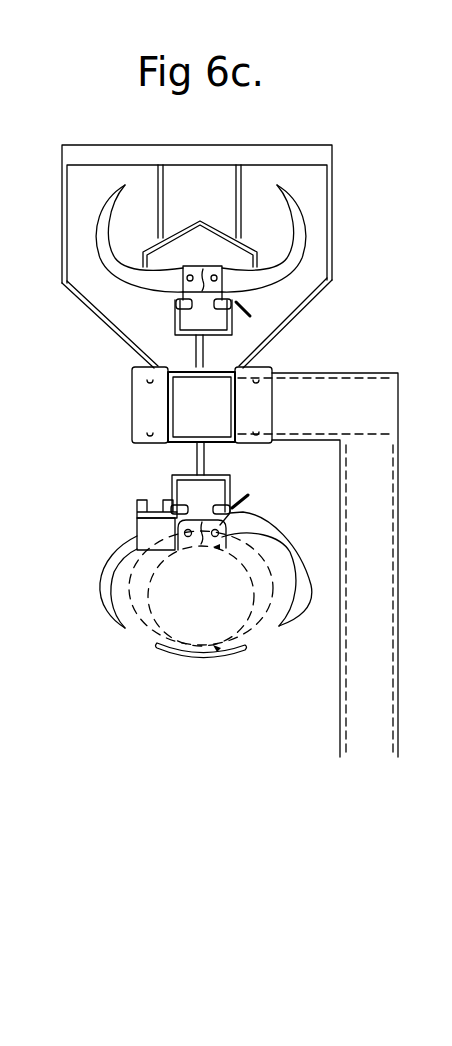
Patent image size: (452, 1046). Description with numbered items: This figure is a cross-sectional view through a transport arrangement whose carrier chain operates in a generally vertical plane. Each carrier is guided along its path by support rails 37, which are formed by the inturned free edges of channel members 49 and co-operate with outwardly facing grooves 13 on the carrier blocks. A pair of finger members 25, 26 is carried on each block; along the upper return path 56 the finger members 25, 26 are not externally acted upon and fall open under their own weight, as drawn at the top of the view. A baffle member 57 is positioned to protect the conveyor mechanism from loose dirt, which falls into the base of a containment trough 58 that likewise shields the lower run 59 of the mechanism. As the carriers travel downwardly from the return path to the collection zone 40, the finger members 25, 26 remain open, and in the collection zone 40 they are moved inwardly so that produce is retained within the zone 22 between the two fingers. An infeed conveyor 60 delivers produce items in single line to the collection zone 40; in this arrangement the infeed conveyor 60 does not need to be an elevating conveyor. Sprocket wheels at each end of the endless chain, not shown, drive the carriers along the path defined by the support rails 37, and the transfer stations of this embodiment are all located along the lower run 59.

The outwardly facing groove 13 is at (0, 675).
The zone 22 is at (172, 605).
The finger member 25 is at (293, 257).
The finger member 26 is at (94, 238).
The support rail 37 is at (182, 300).
The collection zone 40 is at (220, 651).
The channel member 49 is at (230, 332).
The downward facing wall of the pocket 56 is at (92, 271).
The baffle member 57 is at (223, 233).
The containment trough 58 is at (117, 338).
The lower run 59 is at (152, 476).
The infeed conveyor 60 is at (197, 655).